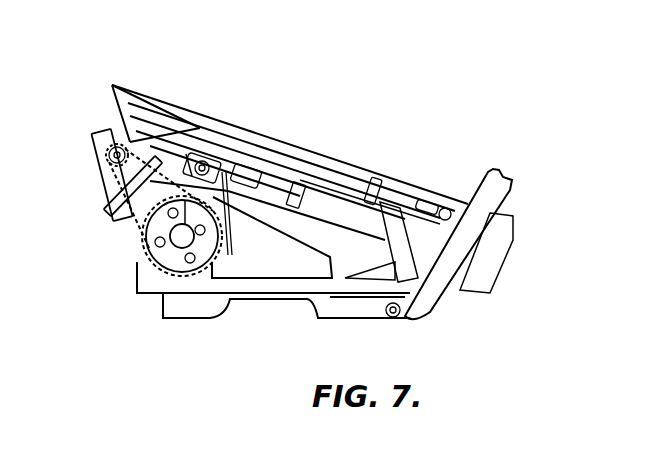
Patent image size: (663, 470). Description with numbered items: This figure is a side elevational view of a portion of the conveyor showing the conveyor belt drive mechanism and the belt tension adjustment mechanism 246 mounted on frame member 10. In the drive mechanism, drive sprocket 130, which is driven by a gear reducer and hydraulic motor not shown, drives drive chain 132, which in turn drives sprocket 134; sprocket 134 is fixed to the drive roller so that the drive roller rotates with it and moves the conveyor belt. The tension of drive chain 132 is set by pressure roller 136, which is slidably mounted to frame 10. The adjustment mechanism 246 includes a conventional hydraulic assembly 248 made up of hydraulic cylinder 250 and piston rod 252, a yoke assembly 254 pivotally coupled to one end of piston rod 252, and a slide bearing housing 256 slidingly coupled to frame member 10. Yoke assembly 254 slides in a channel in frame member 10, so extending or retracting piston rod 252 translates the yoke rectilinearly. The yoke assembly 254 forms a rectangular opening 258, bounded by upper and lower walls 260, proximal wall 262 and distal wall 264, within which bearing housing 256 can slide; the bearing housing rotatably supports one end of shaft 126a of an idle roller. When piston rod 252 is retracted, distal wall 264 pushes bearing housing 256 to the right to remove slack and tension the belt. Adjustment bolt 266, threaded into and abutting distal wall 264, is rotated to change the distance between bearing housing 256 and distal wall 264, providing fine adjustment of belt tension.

The frame member 10 is at (346, 154).
The shaft 126a is at (203, 158).
The drive sprocket 130 is at (142, 262).
The drive chain 132 is at (127, 222).
The sprocket 134 is at (107, 157).
The pressure roller 136 is at (133, 125).
The adjustment mechanism 246 is at (340, 151).
The hydraulic assembly 248 is at (334, 240).
The hydraulic cylinder 250 is at (397, 260).
The piston rod 252 is at (307, 184).
The yoke assembly 254 is at (239, 162).
The slide bearing housing 256 is at (203, 160).
The rectangular opening 258 is at (257, 179).
The upper and lower walls 260 is at (218, 160).
The proximal wall 262 is at (228, 172).
The distal wall 264 is at (164, 148).
The adjustment bolt 266 is at (112, 86).